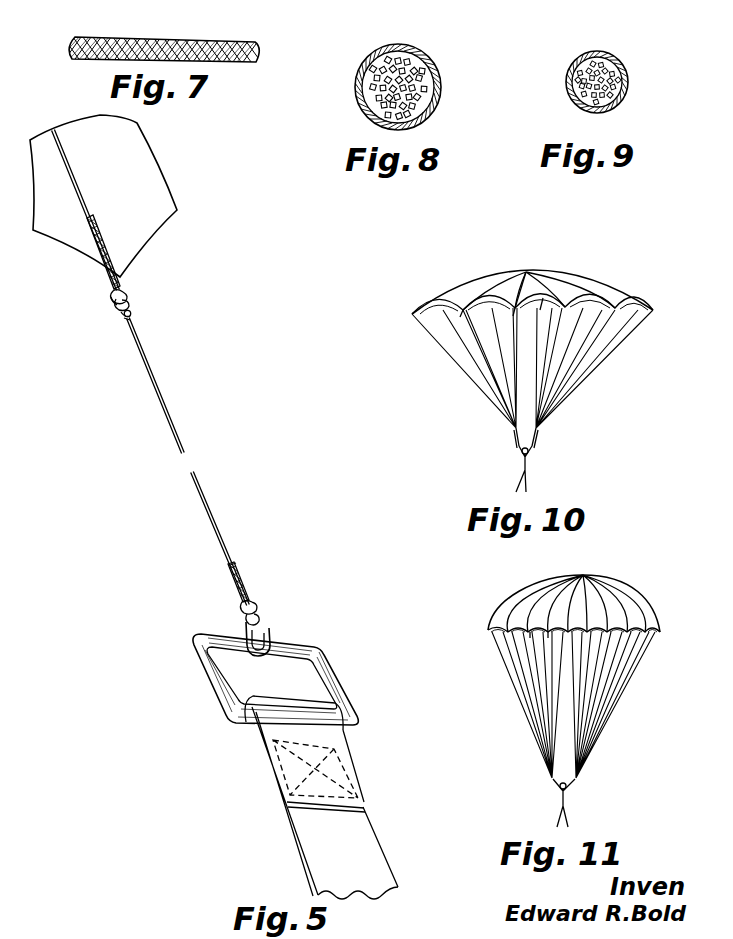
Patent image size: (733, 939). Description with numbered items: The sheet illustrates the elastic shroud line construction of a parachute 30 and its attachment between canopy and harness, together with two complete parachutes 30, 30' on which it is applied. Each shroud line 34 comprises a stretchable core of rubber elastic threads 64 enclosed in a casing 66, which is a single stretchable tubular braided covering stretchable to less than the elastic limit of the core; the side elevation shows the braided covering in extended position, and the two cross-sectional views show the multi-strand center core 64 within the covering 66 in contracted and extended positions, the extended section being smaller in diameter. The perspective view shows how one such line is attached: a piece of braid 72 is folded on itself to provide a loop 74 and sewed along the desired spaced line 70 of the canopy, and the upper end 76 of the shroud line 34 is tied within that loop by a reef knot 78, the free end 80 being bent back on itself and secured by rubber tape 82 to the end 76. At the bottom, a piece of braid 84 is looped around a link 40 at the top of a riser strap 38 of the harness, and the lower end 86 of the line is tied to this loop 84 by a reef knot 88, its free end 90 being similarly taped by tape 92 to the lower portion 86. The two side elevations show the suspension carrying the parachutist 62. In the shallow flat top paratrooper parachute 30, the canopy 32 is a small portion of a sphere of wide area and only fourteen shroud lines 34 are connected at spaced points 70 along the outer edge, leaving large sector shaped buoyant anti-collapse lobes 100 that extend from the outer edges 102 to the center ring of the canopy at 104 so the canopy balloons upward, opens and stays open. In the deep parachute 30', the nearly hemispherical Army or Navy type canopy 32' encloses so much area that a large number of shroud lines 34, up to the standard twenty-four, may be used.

In FIG. 10, the parachute 30 is at (544, 292).
In FIG. 11, the parachute 30' is at (594, 603).
In FIG. 10, the canopy 32 is at (532, 289).
In FIG. 11, the canopy 32' is at (574, 598).
In FIG. 5, the shroud lines 34 is at (214, 526).
In FIG. 10, the shroud lines 34 is at (574, 404).
In FIG. 11, the shroud lines 34 is at (597, 731).
In FIG. 5, the riser straps 38 is at (380, 848).
In FIG. 5, the links 40 is at (324, 656).
In FIG. 10, the parachutist 62 is at (516, 473).
In FIG. 11, the parachutist 62 is at (560, 804).
In FIG. 8, the elastic threads 64 is at (441, 96).
In FIG. 9, the elastic threads 64 is at (612, 102).
In FIG. 7, the casing 66 is at (219, 38).
In FIG. 8, the casing 66 is at (412, 46).
In FIG. 9, the casing 66 is at (614, 55).
In FIG. 5, the point of the canopy 70 is at (124, 271).
In FIG. 10, the point of the canopy 70 is at (514, 307).
In FIG. 11, the point of the canopy 70 is at (547, 628).
In FIG. 5, the piece of braid 72 is at (108, 254).
In FIG. 5, the loop 74 is at (128, 296).
In FIG. 5, the upper end of the shroud line 76 is at (122, 320).
In FIG. 5, the reef knot 78 is at (113, 298).
In FIG. 5, the free end 80 is at (132, 316).
In FIG. 5, the rubber tape 82 is at (126, 326).
In FIG. 5, the piece of braid 84 is at (275, 638).
In FIG. 5, the lower end of the shroud line 86 is at (262, 619).
In FIG. 5, the reef knot 88 is at (256, 608).
In FIG. 5, the free end 90 is at (238, 581).
In FIG. 5, the tape 92 is at (232, 584).
In FIG. 10, the anti-collapse lobes 100 is at (562, 286).
In FIG. 10, the outer edges 102 is at (543, 299).
In FIG. 10, the center ring of the canopy 104 is at (516, 300).